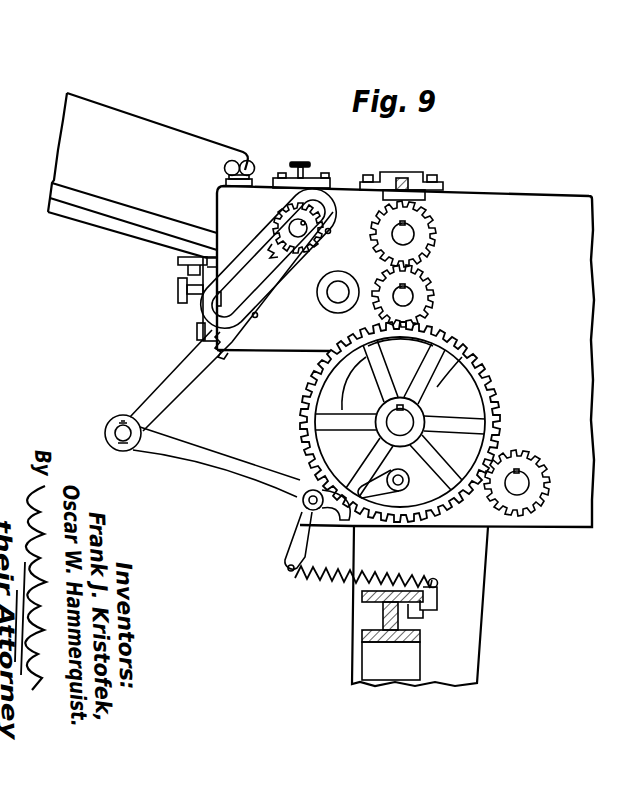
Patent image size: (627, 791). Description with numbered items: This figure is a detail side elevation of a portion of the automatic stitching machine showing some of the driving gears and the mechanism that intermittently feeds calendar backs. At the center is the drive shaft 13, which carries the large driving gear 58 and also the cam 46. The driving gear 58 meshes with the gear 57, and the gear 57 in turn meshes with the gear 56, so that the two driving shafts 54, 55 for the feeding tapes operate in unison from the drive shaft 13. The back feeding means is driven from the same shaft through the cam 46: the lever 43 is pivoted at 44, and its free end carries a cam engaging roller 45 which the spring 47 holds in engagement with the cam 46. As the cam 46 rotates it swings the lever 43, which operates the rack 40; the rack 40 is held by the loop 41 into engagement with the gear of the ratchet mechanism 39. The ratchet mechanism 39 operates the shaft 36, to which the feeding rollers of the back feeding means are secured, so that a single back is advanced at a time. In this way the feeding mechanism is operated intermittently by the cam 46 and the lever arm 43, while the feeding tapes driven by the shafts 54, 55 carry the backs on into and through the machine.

The drive shaft 13 is at (412, 420).
The shaft 36 is at (318, 222).
The ratchet mechanism 39 is at (282, 216).
The rack 40 is at (224, 350).
The loop 41 is at (205, 308).
The lever 43 is at (223, 474).
The pivot 44 is at (300, 506).
The cam engaging roller 45 is at (401, 492).
The cam 46 is at (457, 386).
The spring 47 is at (332, 581).
The driving shaft 54 is at (410, 237).
The driving shaft 55 is at (412, 288).
The gear 56 is at (425, 222).
The gear 57 is at (425, 297).
The driving gear 58 is at (445, 340).